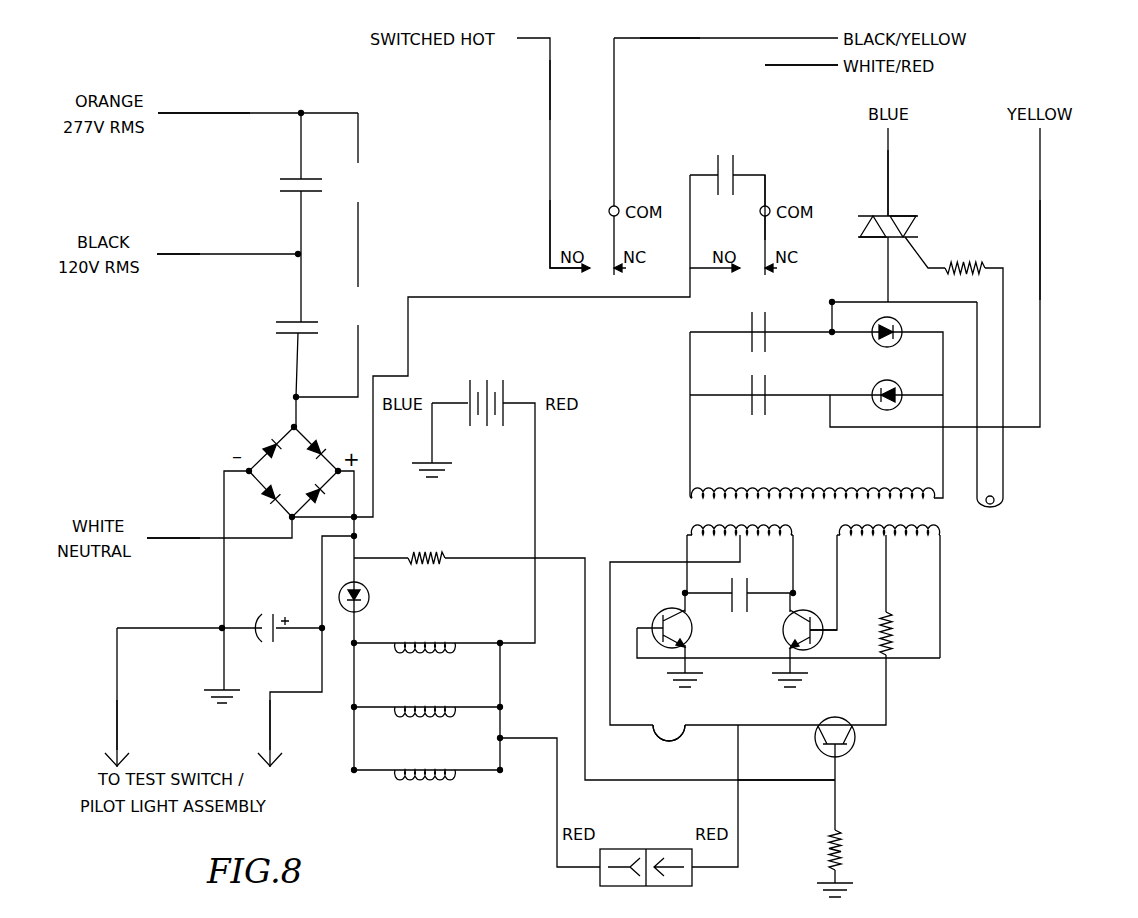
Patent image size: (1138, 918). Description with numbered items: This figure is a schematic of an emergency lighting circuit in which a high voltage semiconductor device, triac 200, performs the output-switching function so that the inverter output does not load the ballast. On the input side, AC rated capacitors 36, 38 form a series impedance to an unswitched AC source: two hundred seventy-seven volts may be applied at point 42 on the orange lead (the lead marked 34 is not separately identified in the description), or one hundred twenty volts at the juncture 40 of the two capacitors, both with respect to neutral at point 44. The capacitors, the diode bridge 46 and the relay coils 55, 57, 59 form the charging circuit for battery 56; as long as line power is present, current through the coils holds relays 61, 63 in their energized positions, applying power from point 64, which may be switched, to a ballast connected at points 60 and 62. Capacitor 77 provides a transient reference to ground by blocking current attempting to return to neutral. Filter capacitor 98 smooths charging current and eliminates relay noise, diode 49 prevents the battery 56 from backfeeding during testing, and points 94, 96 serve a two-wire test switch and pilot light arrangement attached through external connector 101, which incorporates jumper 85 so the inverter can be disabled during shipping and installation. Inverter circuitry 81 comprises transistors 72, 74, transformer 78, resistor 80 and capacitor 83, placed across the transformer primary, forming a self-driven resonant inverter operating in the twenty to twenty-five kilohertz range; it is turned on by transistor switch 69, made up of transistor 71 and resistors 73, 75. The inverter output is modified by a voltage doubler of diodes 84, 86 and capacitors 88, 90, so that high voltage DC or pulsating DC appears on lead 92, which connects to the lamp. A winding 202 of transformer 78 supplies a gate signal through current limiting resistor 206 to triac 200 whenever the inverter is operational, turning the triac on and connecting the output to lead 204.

The 277 volt AC input line 34 is at (208, 95).
The 277 volt input point 42 is at (222, 112).
The capacitor 36 is at (265, 165).
The 120 volt input point 40 is at (203, 255).
The capacitor 38 is at (278, 345).
The diode bridge 46 is at (247, 433).
The neutral point 44 is at (190, 533).
The filter capacitor 98 is at (270, 603).
The test switch/pilot light connection point 94 is at (117, 678).
The test switch/pilot light connection point 96 is at (270, 748).
The diode 49 is at (370, 595).
The resistor 75 is at (437, 538).
The relay coil 55 is at (435, 632).
The relay coil 57 is at (420, 695).
The relay coil 59 is at (420, 757).
The battery 56 is at (495, 370).
The power input point 64 is at (550, 80).
The relay 61 is at (522, 240).
The ballast connection point 60 is at (661, 38).
The capacitor 77 is at (712, 137).
The ballast connection point 62 is at (790, 66).
The relay 63 is at (795, 182).
The triac 200 is at (937, 202).
The lead 204 is at (893, 180).
The resistor 206 is at (973, 250).
The lead 92 is at (1043, 258).
The winding 202 is at (1018, 487).
The capacitor 88 is at (778, 342).
The capacitor 90 is at (740, 407).
The diode 84 is at (903, 327).
The diode 86 is at (887, 380).
The transformer 78 is at (812, 483).
The inverter circuitry 81 is at (1013, 538).
The capacitor 83 is at (718, 585).
The transistor 72 is at (653, 650).
The transistor 74 is at (820, 647).
The resistor 80 is at (907, 620).
The jumper 85 is at (672, 737).
The transistor 71 is at (850, 753).
The transistor switch 69 is at (930, 785).
The resistor 73 is at (857, 832).
The external connector 101 is at (692, 875).